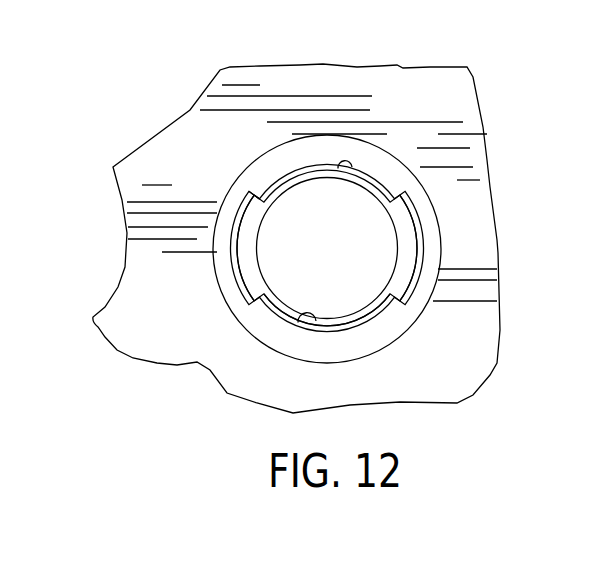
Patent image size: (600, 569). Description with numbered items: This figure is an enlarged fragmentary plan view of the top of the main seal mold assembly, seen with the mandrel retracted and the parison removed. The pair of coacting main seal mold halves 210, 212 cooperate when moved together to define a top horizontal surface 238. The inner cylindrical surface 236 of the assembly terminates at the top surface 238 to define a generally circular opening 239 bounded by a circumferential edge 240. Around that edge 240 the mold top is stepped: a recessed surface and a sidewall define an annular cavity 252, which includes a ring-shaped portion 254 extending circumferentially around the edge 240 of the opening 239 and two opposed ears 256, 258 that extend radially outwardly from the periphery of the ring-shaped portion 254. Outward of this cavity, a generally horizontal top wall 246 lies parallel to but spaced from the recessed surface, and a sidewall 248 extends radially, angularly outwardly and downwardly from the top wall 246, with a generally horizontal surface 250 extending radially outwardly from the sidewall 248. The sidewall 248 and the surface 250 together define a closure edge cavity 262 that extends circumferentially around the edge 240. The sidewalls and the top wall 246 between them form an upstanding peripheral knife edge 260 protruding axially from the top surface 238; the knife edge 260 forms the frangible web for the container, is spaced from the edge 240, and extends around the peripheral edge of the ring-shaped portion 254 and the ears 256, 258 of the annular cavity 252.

The main seal mold half 210 is at (410, 67).
The main seal mold half 212 is at (272, 88).
The inner cylindrical surface 236 is at (299, 314).
The top horizontal surface 238 is at (199, 343).
The circular opening 239 is at (381, 265).
The circumferential edge 240 is at (388, 195).
The top wall 246 is at (276, 192).
The sidewall 248 is at (346, 169).
The horizontal surface 250 is at (345, 141).
The annular cavity 252 is at (411, 238).
The ring-shaped portion 254 is at (352, 316).
The ear 256 is at (412, 258).
The ear 258 is at (250, 217).
The knife edge 260 is at (219, 280).
The closure edge cavity 262 is at (363, 338).